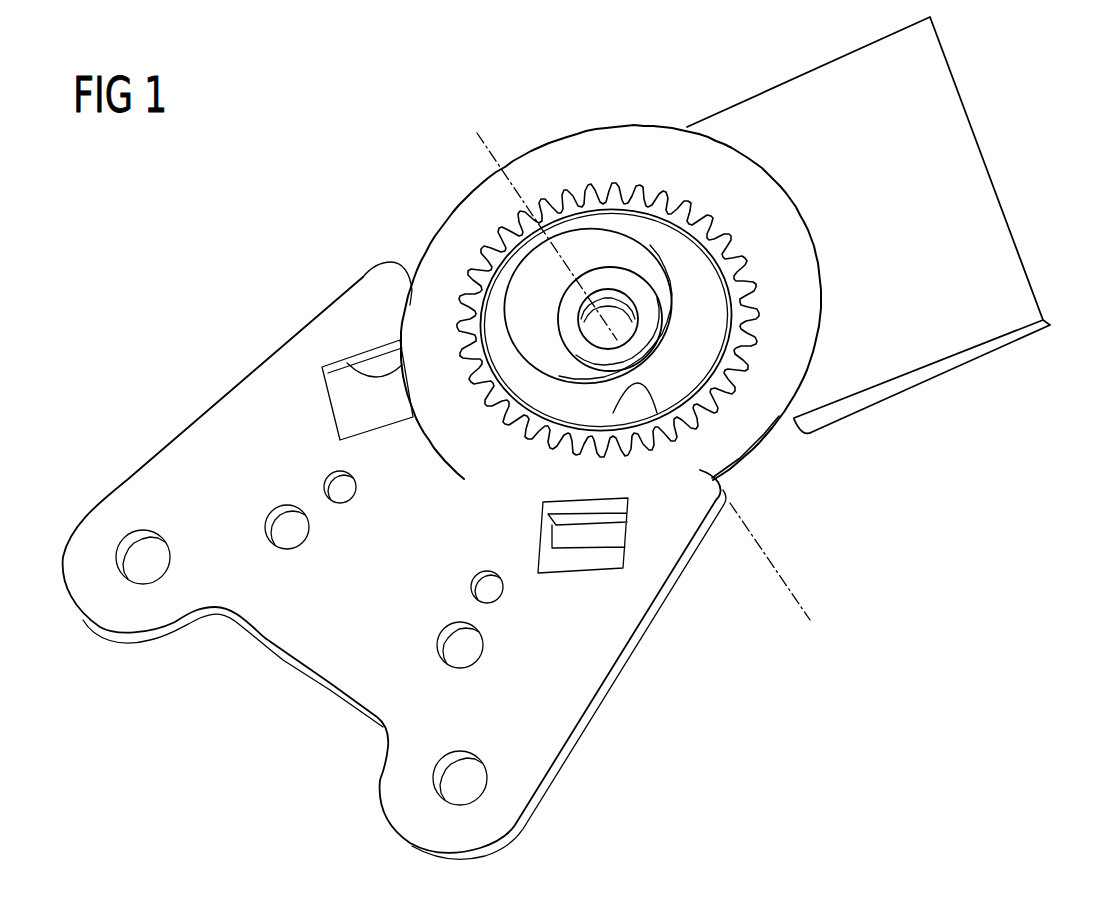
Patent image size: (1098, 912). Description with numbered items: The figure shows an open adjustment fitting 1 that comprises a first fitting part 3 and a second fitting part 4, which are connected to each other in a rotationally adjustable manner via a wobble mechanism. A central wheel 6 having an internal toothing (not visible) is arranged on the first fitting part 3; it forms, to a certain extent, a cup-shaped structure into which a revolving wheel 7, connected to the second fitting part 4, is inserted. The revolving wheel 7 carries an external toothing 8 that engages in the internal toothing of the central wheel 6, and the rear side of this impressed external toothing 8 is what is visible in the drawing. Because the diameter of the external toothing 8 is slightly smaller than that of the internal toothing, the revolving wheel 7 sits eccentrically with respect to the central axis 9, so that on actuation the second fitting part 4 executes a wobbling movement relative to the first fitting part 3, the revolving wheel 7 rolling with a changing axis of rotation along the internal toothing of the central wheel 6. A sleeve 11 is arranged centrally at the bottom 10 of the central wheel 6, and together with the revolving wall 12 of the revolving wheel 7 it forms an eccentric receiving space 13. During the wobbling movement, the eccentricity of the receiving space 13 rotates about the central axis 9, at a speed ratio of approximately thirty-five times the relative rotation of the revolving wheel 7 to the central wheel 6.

The adjustment fitting 1 is at (890, 553).
The first fitting part 3 is at (982, 233).
The second fitting part 4 is at (232, 423).
The central wheel 6 is at (743, 462).
The revolving wheel 7 is at (500, 210).
The external toothing 8 is at (617, 183).
The central axis 9 is at (495, 160).
The bottom 10 is at (645, 390).
The sleeve 11 is at (563, 318).
The revolving wall 12 is at (480, 350).
The receiving space 13 is at (687, 267).